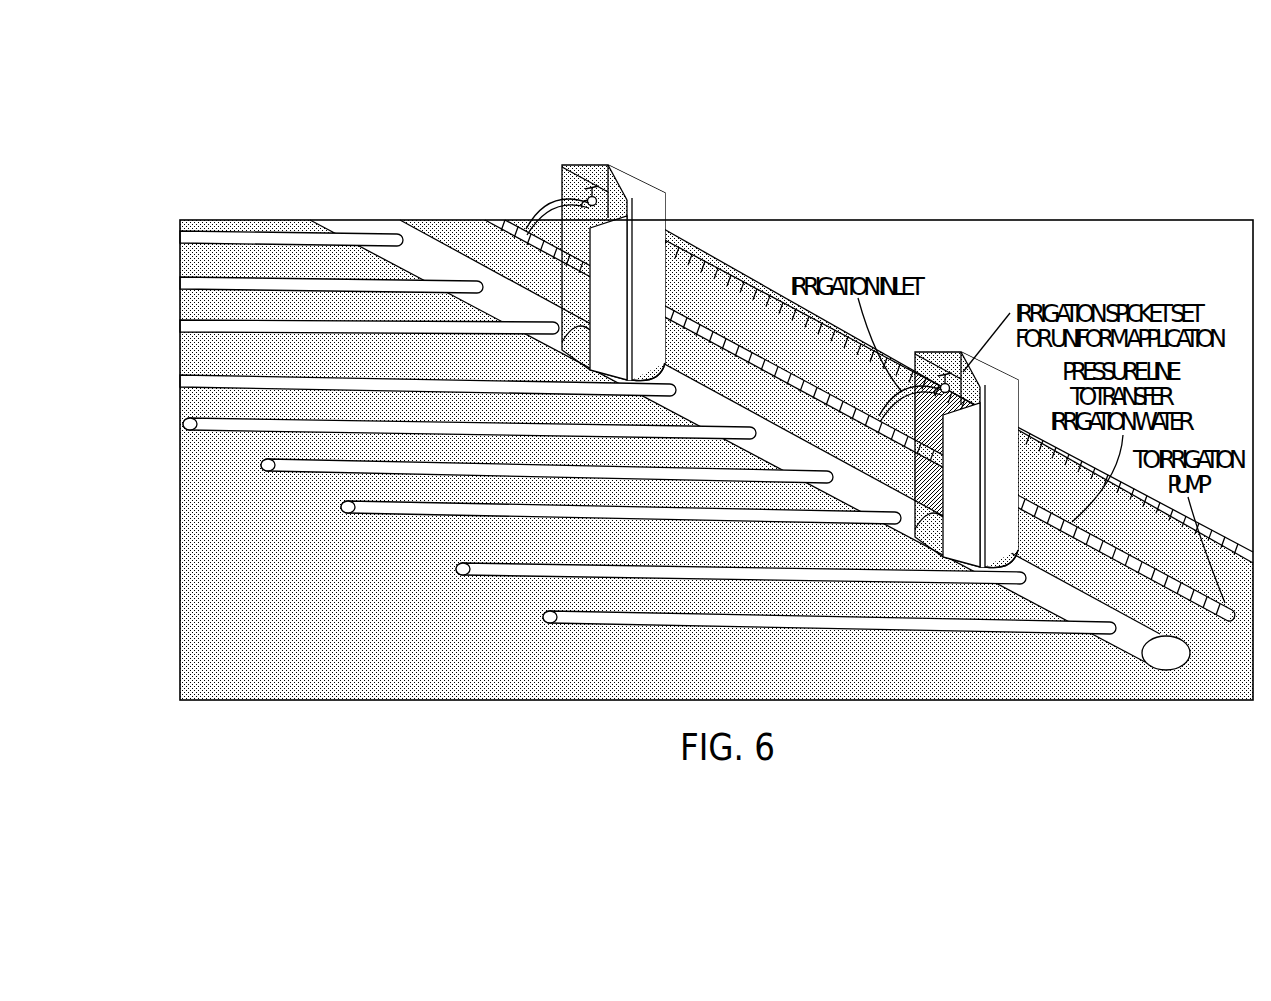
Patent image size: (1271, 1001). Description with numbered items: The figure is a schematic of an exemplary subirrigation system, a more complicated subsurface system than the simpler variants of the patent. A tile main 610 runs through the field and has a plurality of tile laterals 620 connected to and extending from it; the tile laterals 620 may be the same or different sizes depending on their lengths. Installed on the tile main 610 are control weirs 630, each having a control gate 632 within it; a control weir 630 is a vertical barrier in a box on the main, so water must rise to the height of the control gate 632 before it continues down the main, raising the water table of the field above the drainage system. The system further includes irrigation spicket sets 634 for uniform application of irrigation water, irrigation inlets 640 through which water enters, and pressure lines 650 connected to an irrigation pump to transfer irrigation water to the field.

The tile main 610 is at (1130, 643).
The tile laterals 620 is at (943, 628).
The control weir 630 is at (672, 212).
The control gate 632 is at (608, 252).
The irrigation spicket set 634 is at (597, 207).
The irrigation inlet 640 is at (537, 217).
The pressure line 650 is at (510, 217).